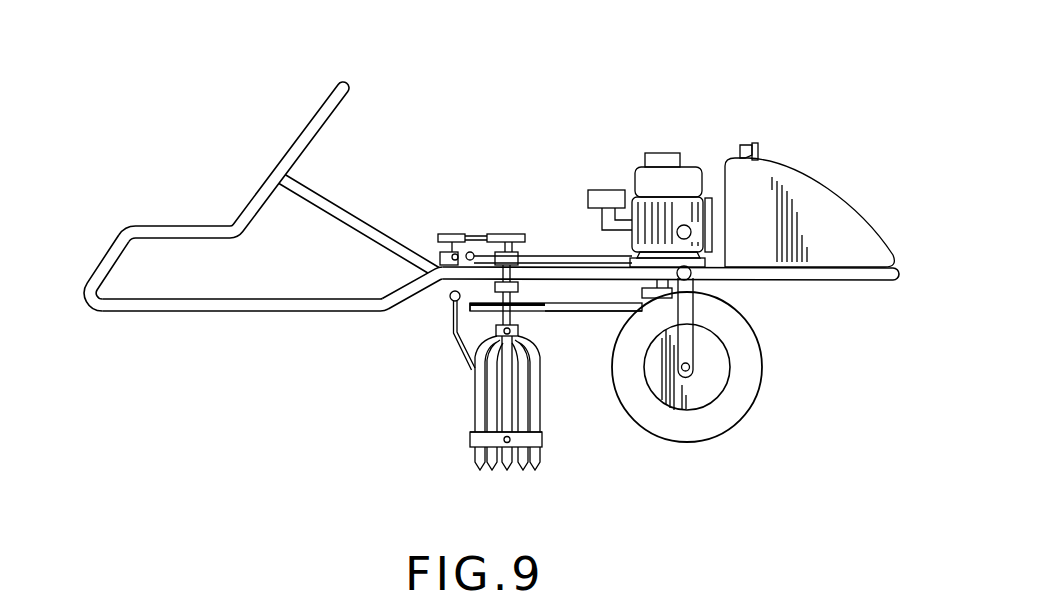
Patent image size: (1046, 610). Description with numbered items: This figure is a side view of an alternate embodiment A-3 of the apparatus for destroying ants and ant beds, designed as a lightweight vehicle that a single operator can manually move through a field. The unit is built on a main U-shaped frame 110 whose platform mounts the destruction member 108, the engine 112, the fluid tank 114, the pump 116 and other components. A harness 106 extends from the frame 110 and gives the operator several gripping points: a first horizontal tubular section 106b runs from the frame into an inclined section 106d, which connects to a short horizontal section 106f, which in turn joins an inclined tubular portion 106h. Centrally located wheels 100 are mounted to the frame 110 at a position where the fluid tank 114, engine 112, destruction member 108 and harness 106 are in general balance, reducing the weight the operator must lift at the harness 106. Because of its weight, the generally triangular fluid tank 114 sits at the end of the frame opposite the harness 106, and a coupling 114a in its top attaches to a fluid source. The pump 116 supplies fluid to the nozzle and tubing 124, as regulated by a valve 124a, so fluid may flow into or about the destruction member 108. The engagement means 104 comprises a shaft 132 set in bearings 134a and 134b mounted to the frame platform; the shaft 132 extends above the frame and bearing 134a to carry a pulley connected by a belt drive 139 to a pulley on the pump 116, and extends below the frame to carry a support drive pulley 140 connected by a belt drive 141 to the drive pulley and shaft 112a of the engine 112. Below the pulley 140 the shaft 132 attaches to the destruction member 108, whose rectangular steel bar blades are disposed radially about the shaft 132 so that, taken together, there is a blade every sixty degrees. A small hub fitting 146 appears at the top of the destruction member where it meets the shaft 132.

The wheels 100 is at (743, 397).
The engagement means 104 is at (468, 452).
The harness 106 is at (340, 118).
The first horizontal tubular section 106b is at (168, 311).
The inclined section 106d is at (93, 253).
The short horizontal section 106f is at (176, 226).
The inclined tubular portion 106h is at (308, 127).
The destruction member 108 is at (475, 412).
The main frame 110 is at (753, 295).
The engine 112 is at (655, 153).
The drive pulley and shaft of engine 112a is at (654, 293).
The fluid tank 114 is at (827, 218).
The coupling 114a is at (754, 143).
The pump 116 is at (449, 233).
The nozzle and tubing 124 is at (459, 352).
The valve 124a is at (451, 299).
The shaft 132 is at (512, 320).
The bearing 134a is at (510, 252).
The bearing 134b is at (513, 284).
The belt drive 139 is at (475, 233).
The support drive pulley 140 is at (470, 307).
The belt drive 141 is at (603, 311).
The tiller hub bracket 146 is at (508, 338).
The alternate embodiment A-3 is at (587, 90).